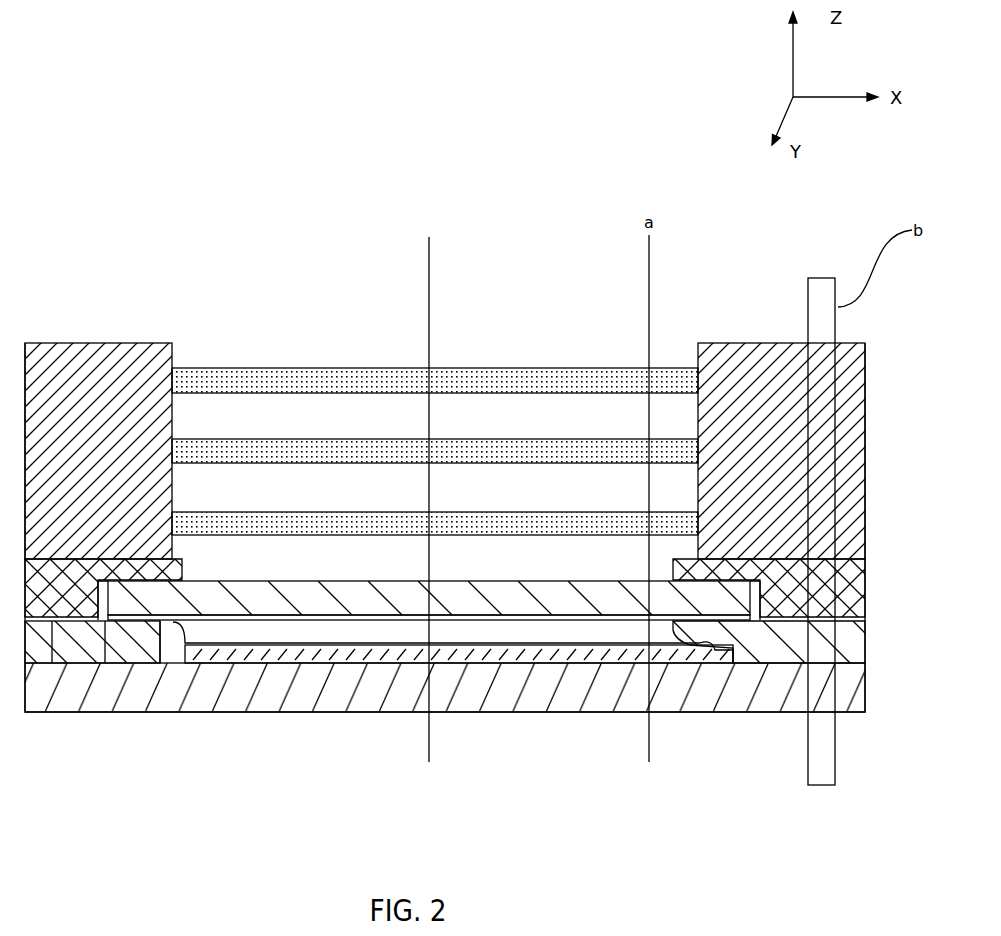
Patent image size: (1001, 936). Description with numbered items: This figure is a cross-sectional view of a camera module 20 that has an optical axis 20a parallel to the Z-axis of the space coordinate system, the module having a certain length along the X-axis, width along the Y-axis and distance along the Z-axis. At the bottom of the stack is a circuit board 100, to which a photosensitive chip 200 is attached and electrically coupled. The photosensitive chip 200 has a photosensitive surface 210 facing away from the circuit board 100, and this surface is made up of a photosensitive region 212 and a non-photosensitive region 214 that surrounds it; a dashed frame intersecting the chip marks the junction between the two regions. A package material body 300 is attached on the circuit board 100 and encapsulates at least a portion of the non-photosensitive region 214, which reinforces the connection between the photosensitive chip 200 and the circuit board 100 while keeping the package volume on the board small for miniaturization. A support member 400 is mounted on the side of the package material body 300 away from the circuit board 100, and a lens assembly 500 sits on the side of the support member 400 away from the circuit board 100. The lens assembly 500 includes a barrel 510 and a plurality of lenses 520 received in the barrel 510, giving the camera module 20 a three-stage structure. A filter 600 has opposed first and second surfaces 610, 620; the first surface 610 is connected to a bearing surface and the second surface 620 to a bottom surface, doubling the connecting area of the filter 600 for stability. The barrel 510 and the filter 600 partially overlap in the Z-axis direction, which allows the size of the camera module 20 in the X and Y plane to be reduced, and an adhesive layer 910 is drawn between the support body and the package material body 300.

The camera module 20 is at (62, 44).
The optical axis 20a is at (430, 269).
The circuit board 100 is at (113, 687).
The photosensitive chip 200 is at (446, 709).
The photosensitive surface 210 is at (446, 709).
The photosensitive region 212 is at (600, 657).
The non-photosensitive region 214 is at (682, 658).
The package material body 300 is at (165, 625).
The support member 400 is at (63, 590).
The lens assembly 500 is at (445, 392).
The barrel 510 is at (122, 345).
The lenses 520 is at (216, 368).
The filter 600 is at (429, 685).
The first surface 610 is at (465, 617).
The second surface 620 is at (532, 585).
The conductive adhesive 910 is at (770, 565).